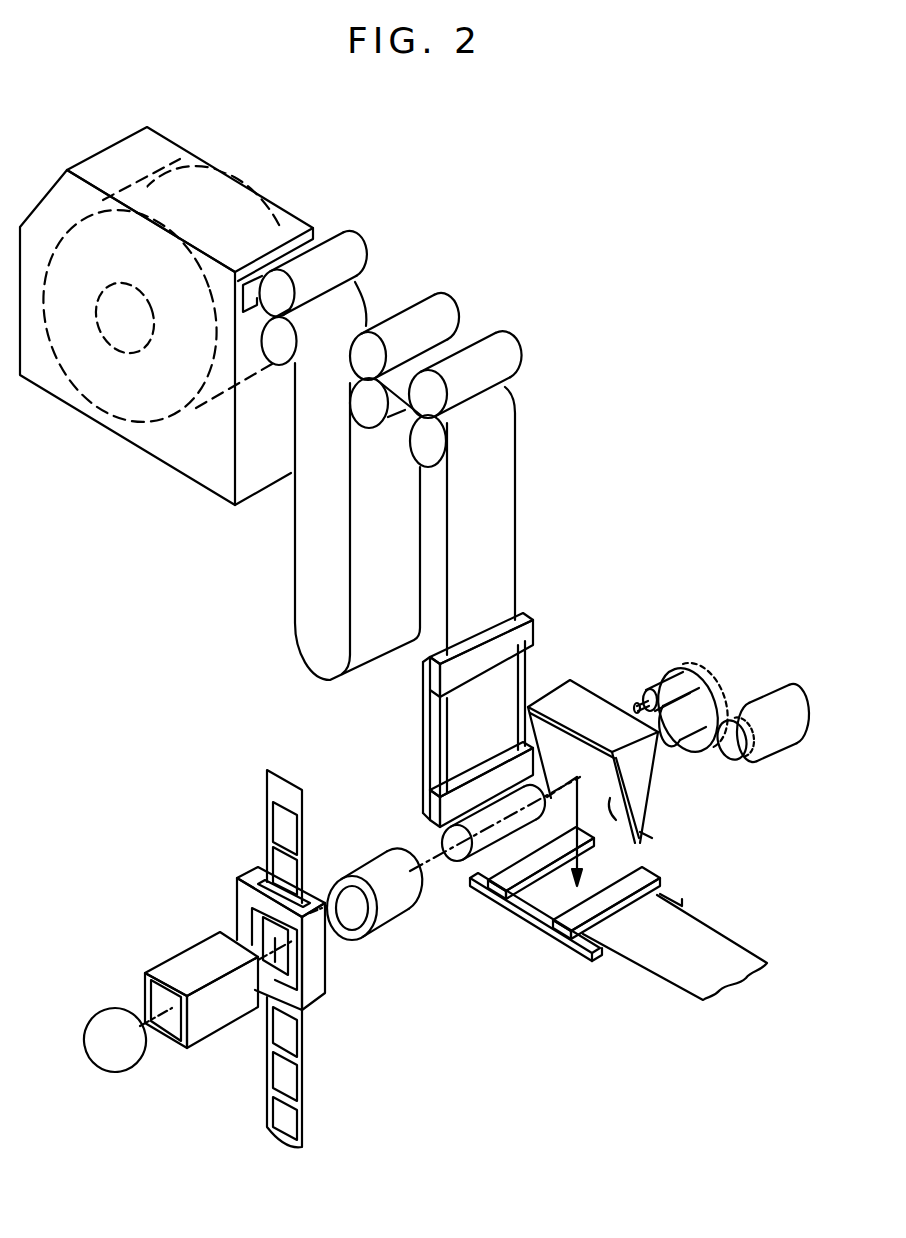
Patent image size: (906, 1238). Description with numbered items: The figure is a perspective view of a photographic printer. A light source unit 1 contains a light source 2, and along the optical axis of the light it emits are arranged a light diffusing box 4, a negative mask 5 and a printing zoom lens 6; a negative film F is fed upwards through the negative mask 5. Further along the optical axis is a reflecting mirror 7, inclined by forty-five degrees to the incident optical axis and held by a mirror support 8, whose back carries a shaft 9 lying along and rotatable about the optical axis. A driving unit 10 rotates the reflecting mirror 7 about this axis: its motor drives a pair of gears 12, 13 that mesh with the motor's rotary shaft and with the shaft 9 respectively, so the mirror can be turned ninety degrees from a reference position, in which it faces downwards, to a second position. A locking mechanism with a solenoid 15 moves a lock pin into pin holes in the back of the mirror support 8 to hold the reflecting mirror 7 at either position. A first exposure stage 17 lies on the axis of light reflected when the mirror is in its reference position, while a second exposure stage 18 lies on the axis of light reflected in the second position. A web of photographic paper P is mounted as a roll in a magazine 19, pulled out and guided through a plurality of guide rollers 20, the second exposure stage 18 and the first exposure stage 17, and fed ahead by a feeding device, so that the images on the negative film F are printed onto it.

The light source unit 1 is at (122, 1082).
The light source 2 is at (88, 1010).
The light diffusing box 4 is at (187, 960).
The negative mask 5 is at (237, 893).
The printing zoom lens 6 is at (368, 867).
The reflecting mirror 7 is at (640, 832).
The mirror support 8 is at (573, 677).
The shaft 9 is at (678, 737).
The driving unit 10 is at (777, 666).
The gear 12 is at (740, 752).
The gear 13 is at (698, 668).
The solenoid 15 is at (665, 682).
The first exposure stage 17 is at (527, 922).
The second exposure stage 18 is at (422, 724).
The magazine 19 is at (197, 153).
The guide rollers 20 is at (492, 340).
The negative film F is at (267, 803).
The photographic paper P is at (297, 553).